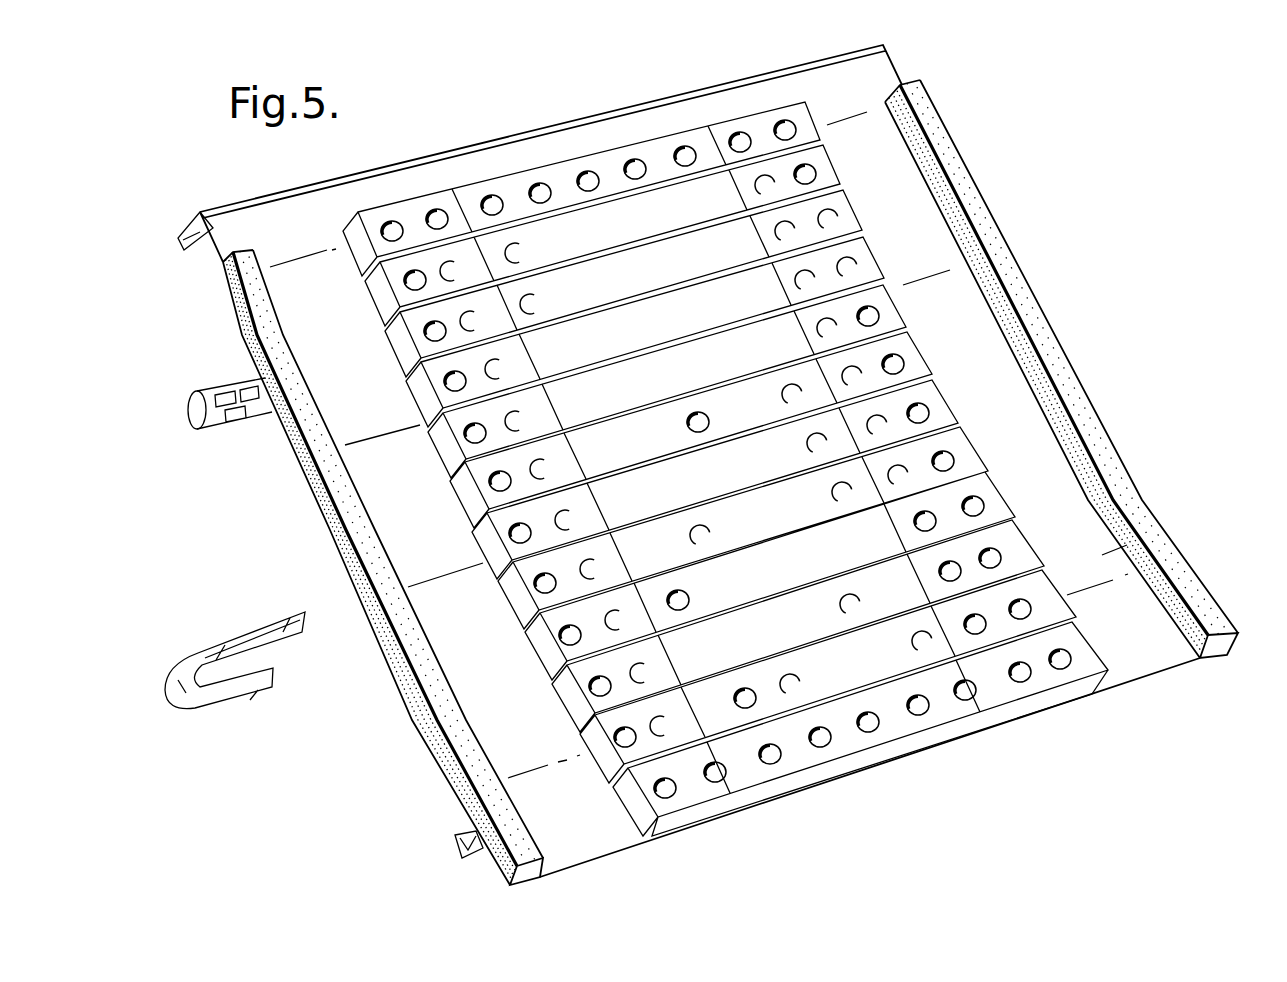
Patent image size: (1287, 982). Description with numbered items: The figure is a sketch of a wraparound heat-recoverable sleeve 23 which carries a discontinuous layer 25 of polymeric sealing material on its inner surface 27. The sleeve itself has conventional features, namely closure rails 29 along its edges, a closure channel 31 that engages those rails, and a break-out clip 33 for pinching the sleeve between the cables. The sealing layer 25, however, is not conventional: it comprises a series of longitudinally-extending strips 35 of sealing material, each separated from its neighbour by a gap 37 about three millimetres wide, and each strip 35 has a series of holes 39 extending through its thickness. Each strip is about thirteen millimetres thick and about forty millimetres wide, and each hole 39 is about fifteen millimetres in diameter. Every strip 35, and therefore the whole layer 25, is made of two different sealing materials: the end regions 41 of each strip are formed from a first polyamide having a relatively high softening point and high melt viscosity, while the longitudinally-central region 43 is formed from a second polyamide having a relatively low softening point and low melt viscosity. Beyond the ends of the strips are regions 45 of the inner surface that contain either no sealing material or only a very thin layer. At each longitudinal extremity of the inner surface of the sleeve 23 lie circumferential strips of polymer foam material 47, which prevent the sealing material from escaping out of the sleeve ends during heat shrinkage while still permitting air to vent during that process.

The wraparound heat-recoverable sleeve 23 is at (503, 125).
The discontinuous layer of polymeric sealing material 25 is at (1090, 643).
The inner surface 27 is at (950, 314).
The closure rails 29 is at (178, 238).
The closure channel 31 is at (218, 418).
The break-out clip 33 is at (248, 640).
The longitudinally-extending strips of sealing material 35 is at (396, 354).
The gap 37 is at (555, 690).
The holes 39 is at (933, 512).
The end regions 41 is at (1025, 708).
The longitudinally-central region 43 is at (900, 755).
The regions of the inner surface 45 is at (1100, 555).
The circumferential strips of polymer foam material 47 is at (330, 470).